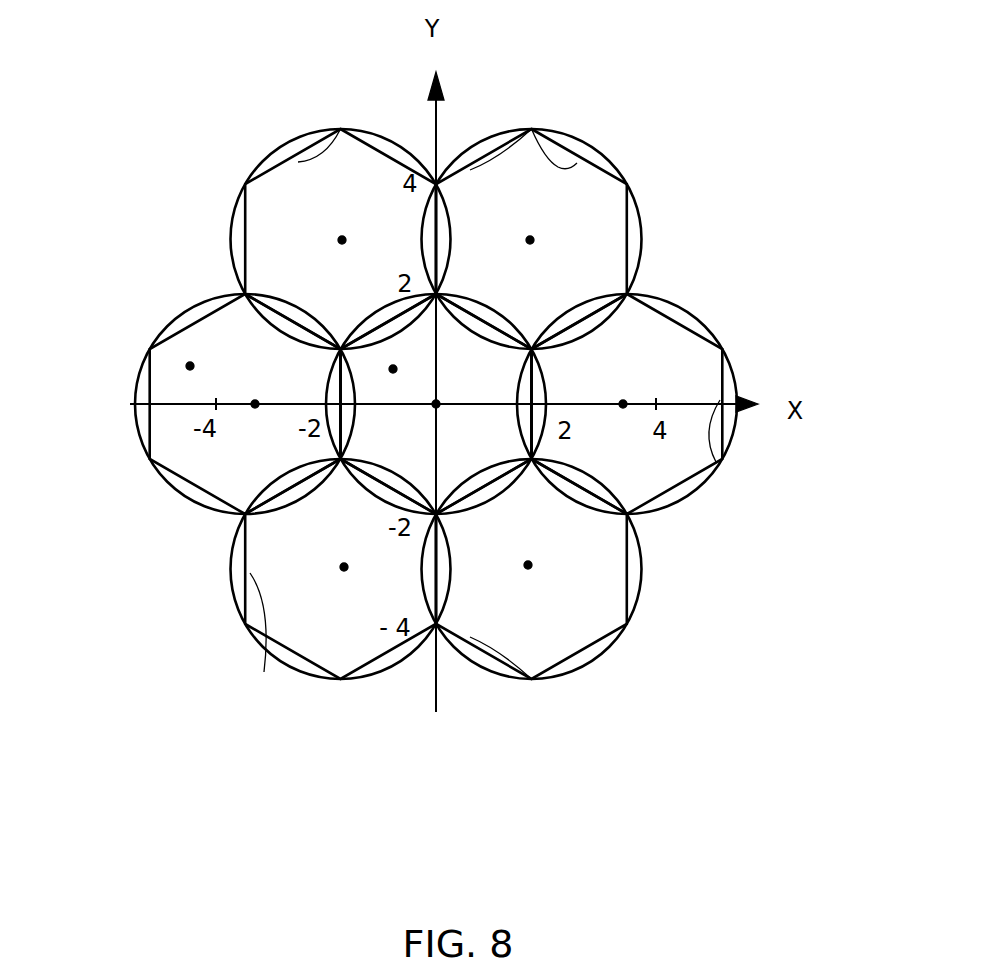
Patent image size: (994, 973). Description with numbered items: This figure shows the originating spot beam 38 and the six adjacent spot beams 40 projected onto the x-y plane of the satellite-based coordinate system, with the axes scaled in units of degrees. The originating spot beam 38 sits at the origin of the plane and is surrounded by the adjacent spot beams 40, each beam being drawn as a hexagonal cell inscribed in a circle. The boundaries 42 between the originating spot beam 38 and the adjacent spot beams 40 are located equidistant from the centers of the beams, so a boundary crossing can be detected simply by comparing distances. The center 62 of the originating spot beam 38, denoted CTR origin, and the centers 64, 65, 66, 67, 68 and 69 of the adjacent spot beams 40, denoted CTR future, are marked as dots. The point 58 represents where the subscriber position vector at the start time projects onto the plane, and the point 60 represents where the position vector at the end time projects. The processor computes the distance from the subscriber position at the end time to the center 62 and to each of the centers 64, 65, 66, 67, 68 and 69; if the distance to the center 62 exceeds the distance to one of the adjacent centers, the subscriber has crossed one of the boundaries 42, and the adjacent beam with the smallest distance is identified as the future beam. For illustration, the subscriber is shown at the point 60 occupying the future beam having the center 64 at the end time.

The originating spot beam 38 is at (492, 300).
The adjacent spot beams 40 is at (279, 152).
The boundaries 42 is at (243, 207).
The point 58 is at (393, 369).
The point 60 is at (190, 366).
The center of the originating spot beam 62 is at (436, 404).
The center of adjacent spot beam 64 is at (255, 404).
The center of adjacent spot beam 65 is at (342, 240).
The center of adjacent spot beam 66 is at (530, 240).
The center of adjacent spot beam 67 is at (623, 404).
The center of adjacent spot beam 68 is at (528, 565).
The center of adjacent spot beam 69 is at (344, 567).